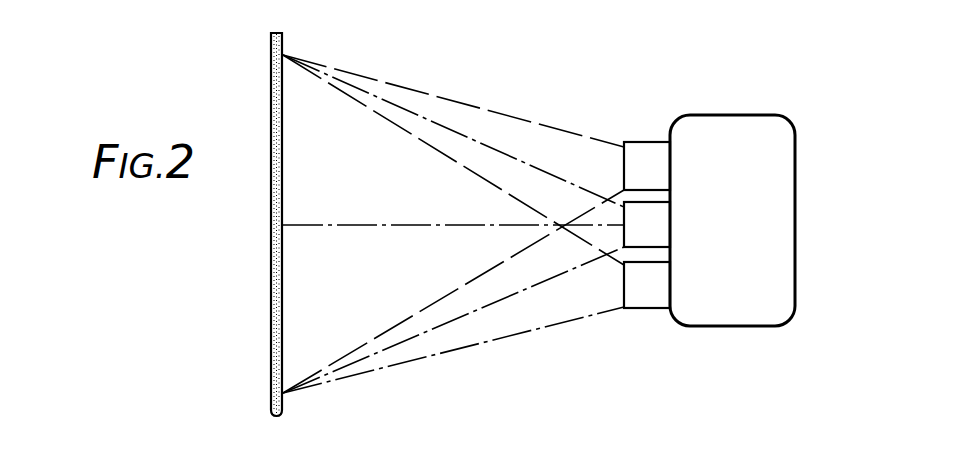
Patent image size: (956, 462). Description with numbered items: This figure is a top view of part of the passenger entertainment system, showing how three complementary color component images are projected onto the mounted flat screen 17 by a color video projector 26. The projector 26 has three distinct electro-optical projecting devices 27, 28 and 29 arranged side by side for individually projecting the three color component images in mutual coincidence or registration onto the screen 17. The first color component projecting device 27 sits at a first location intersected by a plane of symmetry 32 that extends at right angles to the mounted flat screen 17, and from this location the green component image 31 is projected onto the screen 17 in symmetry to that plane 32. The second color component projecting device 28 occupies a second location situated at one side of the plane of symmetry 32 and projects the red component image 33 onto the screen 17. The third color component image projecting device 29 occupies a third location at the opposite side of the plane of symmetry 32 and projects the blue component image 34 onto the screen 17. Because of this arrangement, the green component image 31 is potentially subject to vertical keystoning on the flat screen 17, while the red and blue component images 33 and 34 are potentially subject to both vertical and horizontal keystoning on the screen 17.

The flat screen 17 is at (283, 186).
The color video projector 26 is at (783, 152).
The first color component projecting device 27 is at (655, 236).
The second color component projecting device 28 is at (645, 147).
The third color component image projecting device 29 is at (648, 303).
The green component image 31 is at (563, 178).
The plane of symmetry 32 is at (412, 224).
The red component image 33 is at (518, 118).
The blue component image 34 is at (508, 340).